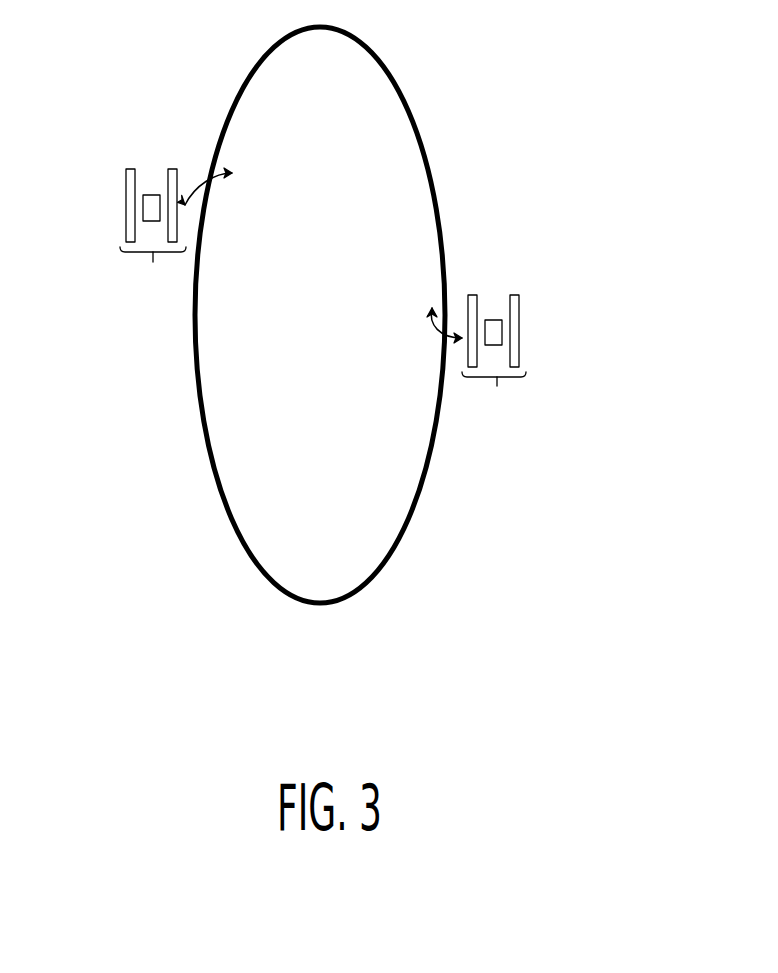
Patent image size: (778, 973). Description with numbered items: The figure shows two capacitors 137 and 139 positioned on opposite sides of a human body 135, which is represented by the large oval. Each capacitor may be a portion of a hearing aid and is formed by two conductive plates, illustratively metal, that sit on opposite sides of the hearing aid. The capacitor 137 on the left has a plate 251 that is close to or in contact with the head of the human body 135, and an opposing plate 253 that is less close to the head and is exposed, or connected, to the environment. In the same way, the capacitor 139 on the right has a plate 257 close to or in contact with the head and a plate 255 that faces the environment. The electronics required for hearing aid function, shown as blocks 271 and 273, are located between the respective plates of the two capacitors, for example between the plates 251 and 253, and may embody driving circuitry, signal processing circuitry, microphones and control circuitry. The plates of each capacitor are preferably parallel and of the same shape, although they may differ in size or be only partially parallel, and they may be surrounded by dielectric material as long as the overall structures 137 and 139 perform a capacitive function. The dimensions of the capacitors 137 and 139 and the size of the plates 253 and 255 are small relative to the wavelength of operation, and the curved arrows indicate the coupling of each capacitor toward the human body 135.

The human body 135 is at (400, 543).
The capacitor 137 is at (137, 210).
The capacitor 139 is at (536, 336).
The plate 251 is at (175, 169).
The plate 253 is at (128, 169).
The plate 255 is at (519, 323).
The plate 257 is at (472, 295).
The electronics 271 is at (152, 195).
The electronics 273 is at (498, 320).